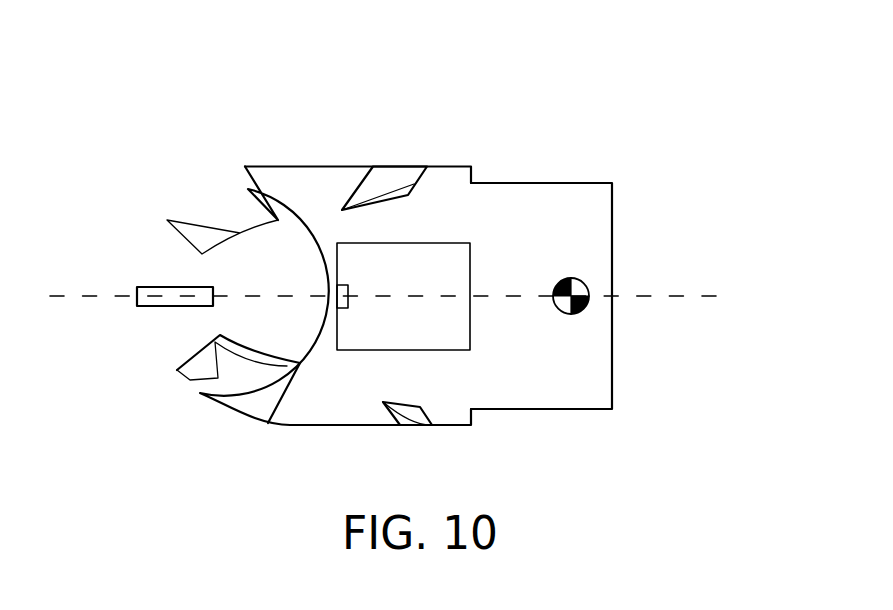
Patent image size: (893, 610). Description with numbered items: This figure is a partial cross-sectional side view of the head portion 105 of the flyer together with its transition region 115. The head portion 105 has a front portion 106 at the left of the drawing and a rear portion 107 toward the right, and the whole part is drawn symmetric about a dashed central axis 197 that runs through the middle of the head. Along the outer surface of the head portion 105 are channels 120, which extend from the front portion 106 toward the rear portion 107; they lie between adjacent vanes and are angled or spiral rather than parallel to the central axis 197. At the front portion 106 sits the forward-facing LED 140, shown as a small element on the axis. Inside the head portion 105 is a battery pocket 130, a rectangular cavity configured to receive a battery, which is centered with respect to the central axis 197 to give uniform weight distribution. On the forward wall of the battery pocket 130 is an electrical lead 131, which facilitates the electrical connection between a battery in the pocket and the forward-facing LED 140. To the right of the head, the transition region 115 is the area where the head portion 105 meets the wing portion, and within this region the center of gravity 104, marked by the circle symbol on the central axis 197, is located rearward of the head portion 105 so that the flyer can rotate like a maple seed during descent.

The center of gravity 104 is at (588, 303).
The head portion 105 is at (344, 219).
The front portion 106 is at (187, 283).
The rear portion 107 is at (490, 157).
The transition region 115 is at (563, 182).
The channels 120 is at (225, 213).
The battery pocket 130 is at (378, 328).
The electrical lead 131 is at (337, 296).
The forward-facing LED 140 is at (157, 303).
The central axis 197 is at (670, 296).